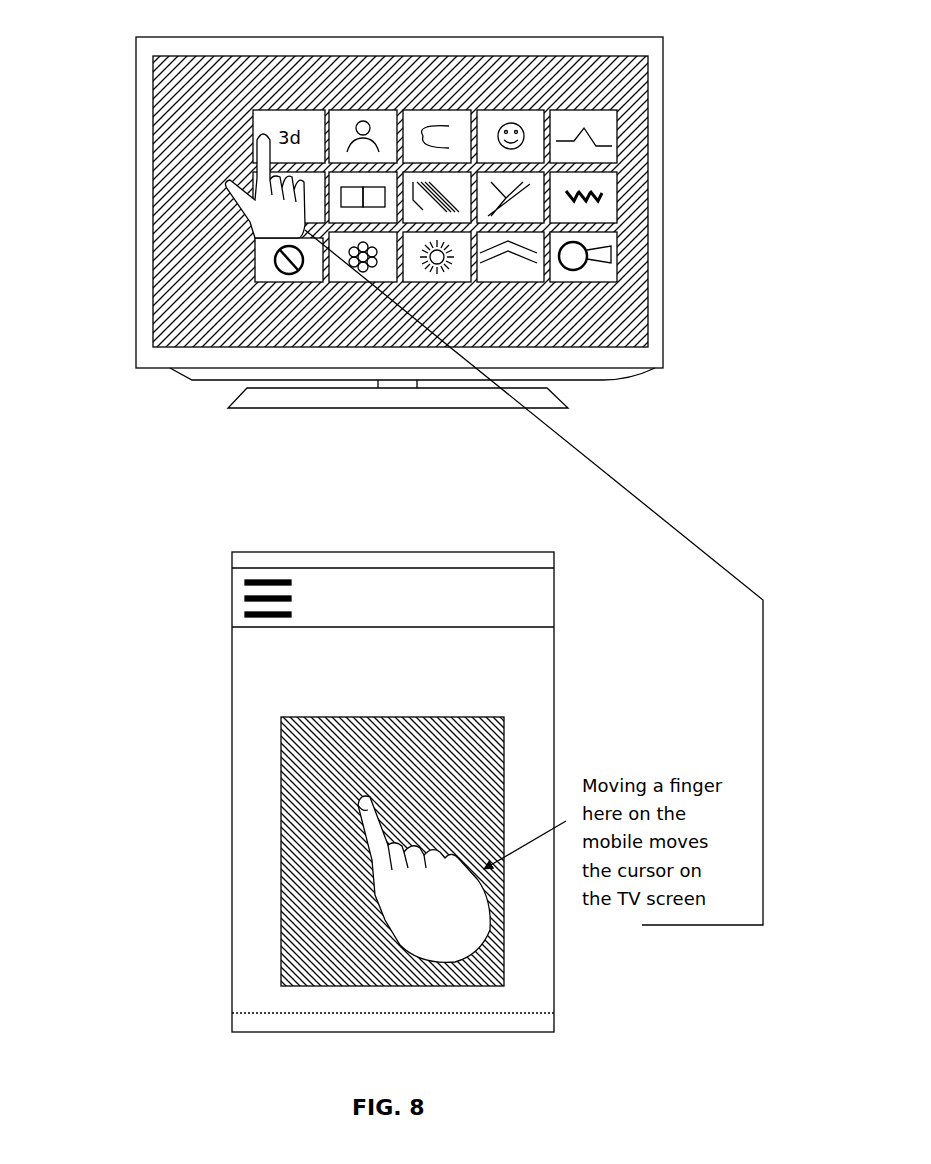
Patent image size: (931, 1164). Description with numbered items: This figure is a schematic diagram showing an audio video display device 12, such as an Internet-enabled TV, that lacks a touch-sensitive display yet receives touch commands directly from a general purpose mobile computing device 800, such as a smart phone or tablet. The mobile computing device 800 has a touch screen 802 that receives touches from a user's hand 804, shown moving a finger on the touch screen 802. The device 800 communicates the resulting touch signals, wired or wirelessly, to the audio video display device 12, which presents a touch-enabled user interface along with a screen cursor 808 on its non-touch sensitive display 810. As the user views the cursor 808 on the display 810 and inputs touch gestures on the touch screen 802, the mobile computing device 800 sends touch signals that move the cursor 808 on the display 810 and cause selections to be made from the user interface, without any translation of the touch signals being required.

The audio video display device 12 is at (665, 133).
The non-touch sensitive display 810 is at (628, 88).
The mobile computing device 800 is at (618, 192).
The touch screen 802 is at (312, 925).
The user's hand 804 is at (355, 833).
The screen cursor 808 is at (265, 218).